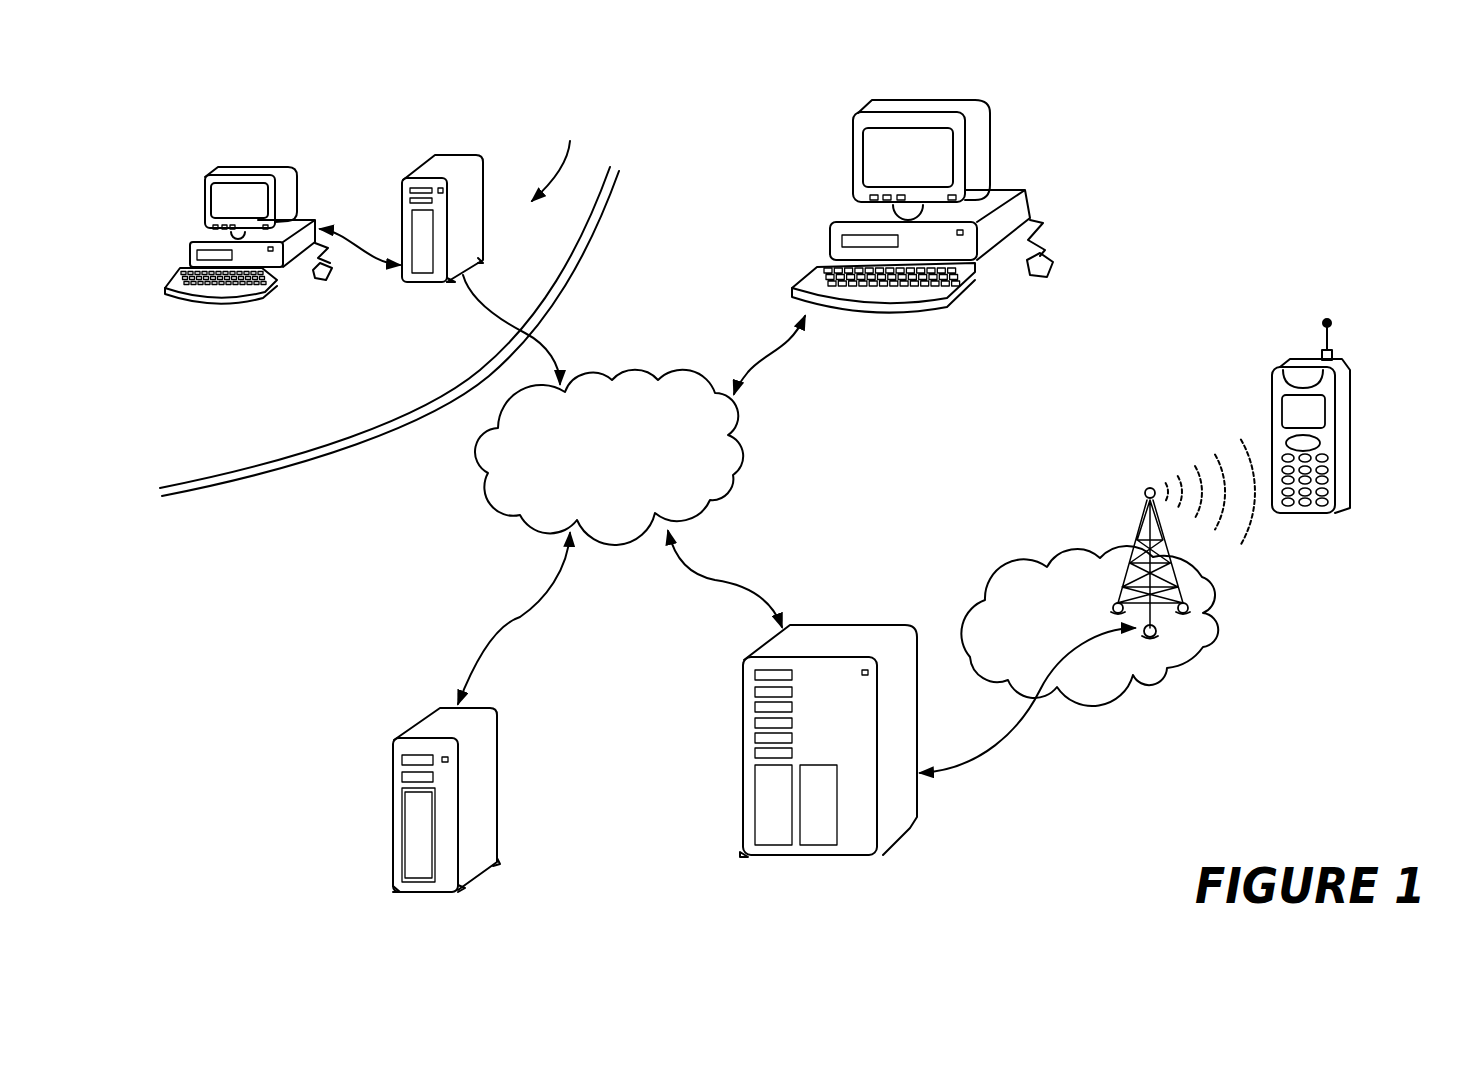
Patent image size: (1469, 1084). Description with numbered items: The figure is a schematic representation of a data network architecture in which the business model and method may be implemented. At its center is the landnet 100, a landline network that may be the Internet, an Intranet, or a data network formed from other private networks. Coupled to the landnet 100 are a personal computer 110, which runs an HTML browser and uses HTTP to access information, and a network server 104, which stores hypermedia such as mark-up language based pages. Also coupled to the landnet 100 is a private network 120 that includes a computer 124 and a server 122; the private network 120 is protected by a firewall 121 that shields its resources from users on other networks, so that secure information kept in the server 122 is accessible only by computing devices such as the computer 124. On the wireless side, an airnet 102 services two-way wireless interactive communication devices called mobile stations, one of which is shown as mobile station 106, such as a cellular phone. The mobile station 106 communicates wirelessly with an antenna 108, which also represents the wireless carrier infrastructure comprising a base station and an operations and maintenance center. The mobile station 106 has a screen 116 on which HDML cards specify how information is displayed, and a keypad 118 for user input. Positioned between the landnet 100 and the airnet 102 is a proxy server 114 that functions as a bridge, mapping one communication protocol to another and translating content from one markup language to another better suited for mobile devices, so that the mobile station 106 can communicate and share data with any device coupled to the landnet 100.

The landnet 100 is at (735, 455).
The airnet 102 is at (1020, 568).
The network server 104 is at (490, 805).
The mobile station 106 is at (1335, 332).
The antenna 108 is at (1147, 512).
The personal computer 110 is at (1020, 193).
The proxy server 114 is at (833, 632).
The screen 116 is at (1312, 413).
The keypad 118 is at (1307, 467).
The private network 120 is at (560, 158).
The firewall 121 is at (612, 167).
The server 122 is at (428, 172).
The computer 124 is at (207, 180).